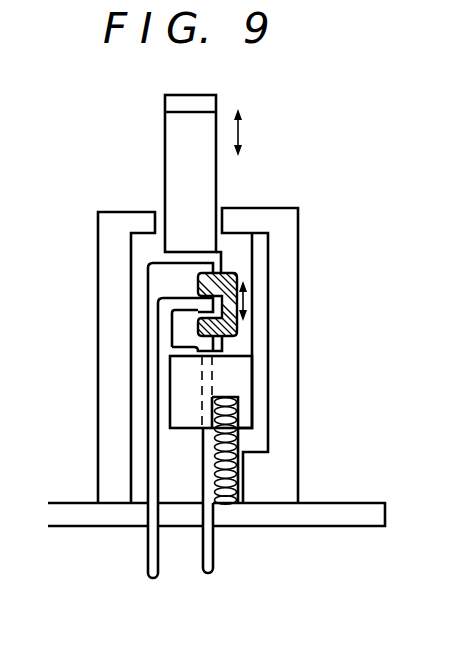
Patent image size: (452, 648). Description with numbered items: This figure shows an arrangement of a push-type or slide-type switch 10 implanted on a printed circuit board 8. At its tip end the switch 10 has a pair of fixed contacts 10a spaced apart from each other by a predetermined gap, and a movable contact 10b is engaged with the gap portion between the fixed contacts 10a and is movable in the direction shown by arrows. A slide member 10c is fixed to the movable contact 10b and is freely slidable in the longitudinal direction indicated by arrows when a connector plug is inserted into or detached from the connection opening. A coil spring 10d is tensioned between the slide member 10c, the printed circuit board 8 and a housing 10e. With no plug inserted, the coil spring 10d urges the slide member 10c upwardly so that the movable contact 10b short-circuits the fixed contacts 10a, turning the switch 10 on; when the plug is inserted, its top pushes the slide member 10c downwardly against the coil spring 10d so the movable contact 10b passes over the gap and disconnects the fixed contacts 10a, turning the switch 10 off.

The printed circuit board 8 is at (70, 523).
The switch 10 is at (258, 190).
The fixed contacts 10a is at (157, 578).
The movable contact 10b is at (238, 330).
The slide member 10c is at (177, 197).
The coil spring 10d is at (240, 494).
The housing 10e is at (290, 432).